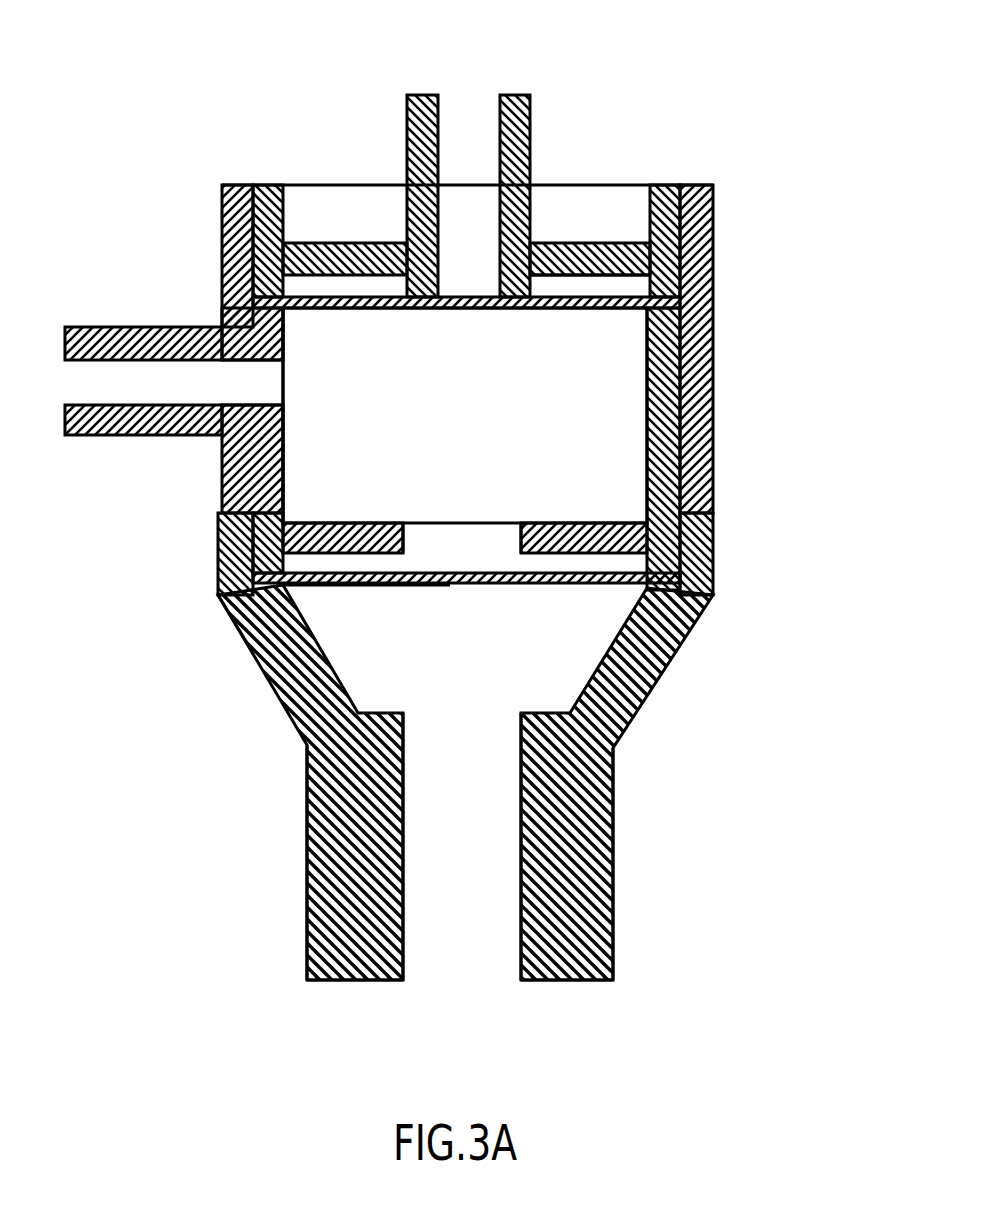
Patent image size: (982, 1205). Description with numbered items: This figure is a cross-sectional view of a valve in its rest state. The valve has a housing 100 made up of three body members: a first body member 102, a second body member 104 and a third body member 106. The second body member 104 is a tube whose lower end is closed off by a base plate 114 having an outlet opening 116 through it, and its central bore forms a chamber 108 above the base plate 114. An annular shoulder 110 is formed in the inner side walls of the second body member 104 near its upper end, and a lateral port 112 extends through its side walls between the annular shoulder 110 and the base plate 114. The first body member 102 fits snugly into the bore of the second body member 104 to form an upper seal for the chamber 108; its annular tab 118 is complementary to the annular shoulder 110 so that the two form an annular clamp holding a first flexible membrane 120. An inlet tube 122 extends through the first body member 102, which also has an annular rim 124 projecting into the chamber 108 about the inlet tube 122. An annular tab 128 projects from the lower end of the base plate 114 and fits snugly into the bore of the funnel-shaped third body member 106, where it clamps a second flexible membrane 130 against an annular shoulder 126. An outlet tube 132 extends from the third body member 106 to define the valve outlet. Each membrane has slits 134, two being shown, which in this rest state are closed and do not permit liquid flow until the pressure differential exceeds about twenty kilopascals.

The housing 100 is at (728, 386).
The first body member 102 is at (553, 243).
The second body member 104 is at (715, 283).
The third body member 106 is at (664, 692).
The chamber 108 is at (430, 469).
The annular shoulder 110 is at (284, 333).
The lateral port 112 is at (128, 436).
The base plate 114 is at (590, 523).
The outlet opening 116 is at (460, 528).
The annular tab 118 is at (221, 253).
The first flexible membrane 120 is at (417, 310).
The inlet tube 122 is at (532, 128).
The annular rim 124 is at (535, 285).
The annular shoulder 126 is at (237, 623).
The annular tab 128 is at (218, 541).
The second flexible membrane 130 is at (440, 584).
The outlet tube 132 is at (375, 308).
The slits 134 is at (373, 587).